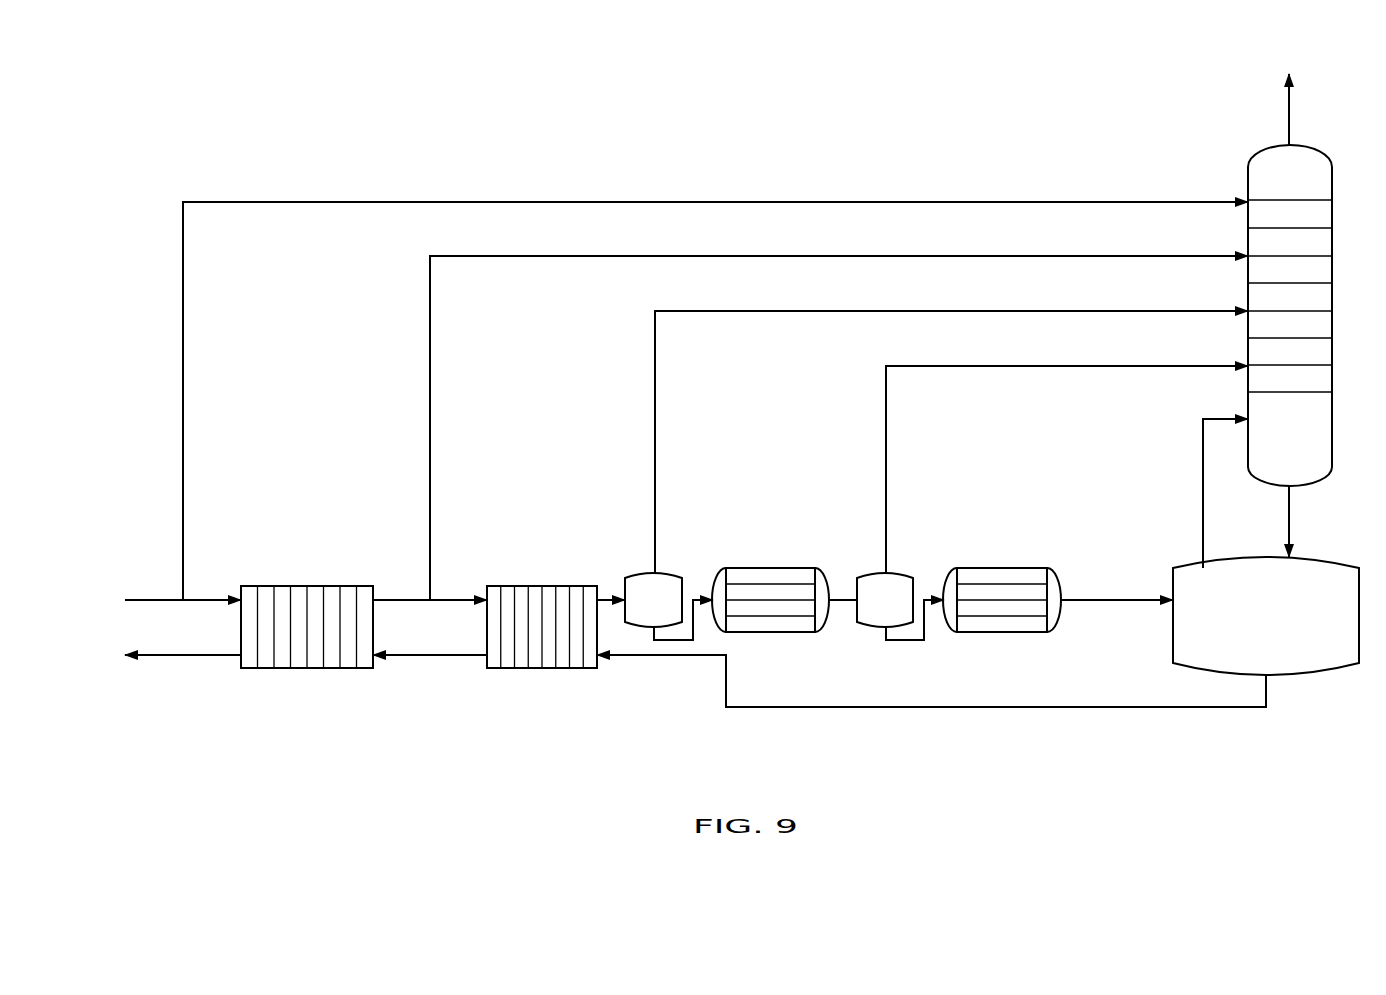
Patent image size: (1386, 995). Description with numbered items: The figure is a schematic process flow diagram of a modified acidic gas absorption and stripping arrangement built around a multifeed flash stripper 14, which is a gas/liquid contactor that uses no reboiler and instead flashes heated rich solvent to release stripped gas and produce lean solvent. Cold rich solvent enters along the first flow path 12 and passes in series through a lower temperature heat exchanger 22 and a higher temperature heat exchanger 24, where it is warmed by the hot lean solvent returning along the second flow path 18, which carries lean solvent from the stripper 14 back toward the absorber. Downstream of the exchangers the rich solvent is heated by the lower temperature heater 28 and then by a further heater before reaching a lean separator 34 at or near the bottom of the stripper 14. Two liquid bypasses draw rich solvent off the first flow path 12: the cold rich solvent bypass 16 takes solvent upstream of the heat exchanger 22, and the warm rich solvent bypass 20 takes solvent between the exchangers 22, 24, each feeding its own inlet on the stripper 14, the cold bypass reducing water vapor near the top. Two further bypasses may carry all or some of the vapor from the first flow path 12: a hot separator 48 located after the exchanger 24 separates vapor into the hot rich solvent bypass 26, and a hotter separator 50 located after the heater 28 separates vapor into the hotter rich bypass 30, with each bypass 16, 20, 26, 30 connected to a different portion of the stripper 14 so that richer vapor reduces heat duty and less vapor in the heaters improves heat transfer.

The first flow path 12 is at (162, 598).
The flash stripper 14 is at (1306, 150).
The cold rich solvent bypass 16 is at (183, 300).
The second flow path 18 is at (233, 658).
The warm rich solvent bypass 20 is at (430, 328).
The lower temperature heat exchanger 22 is at (348, 670).
The higher temperature heat exchanger 24 is at (578, 670).
The hot rich solvent bypass 26 is at (655, 383).
The lower temperature heater 28 is at (752, 632).
The hotter rich bypass 30 is at (973, 366).
The gas/liquid separator 34 is at (1300, 675).
The hot separator 48 is at (668, 573).
The hotter separator 50 is at (899, 573).